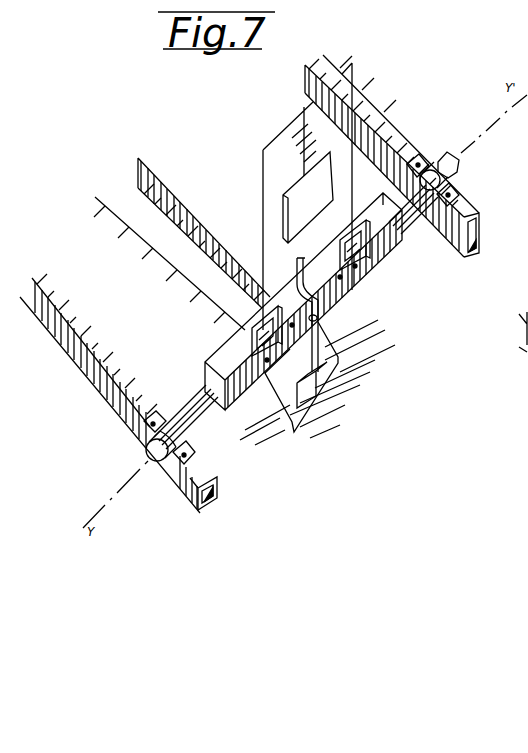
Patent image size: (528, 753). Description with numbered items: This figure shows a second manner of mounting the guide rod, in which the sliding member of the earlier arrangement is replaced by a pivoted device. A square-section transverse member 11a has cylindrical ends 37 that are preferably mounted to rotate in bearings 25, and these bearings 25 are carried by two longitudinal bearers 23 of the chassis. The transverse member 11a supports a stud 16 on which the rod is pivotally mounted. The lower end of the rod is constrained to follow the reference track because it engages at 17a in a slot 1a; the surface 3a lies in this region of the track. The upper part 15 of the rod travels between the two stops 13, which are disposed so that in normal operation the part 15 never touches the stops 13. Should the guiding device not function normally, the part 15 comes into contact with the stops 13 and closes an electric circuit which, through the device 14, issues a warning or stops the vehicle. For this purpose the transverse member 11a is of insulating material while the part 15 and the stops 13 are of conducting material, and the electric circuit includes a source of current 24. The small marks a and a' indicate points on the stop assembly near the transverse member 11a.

The longitudinal bearers 23 is at (364, 107).
The bearings 25 is at (427, 163).
The cylindrical ends 37 is at (451, 187).
The source of current 24 is at (307, 196).
The device 14 is at (308, 197).
The stops 13 is at (368, 245).
The transverse member 11a is at (383, 262).
The upper part 15 is at (307, 280).
The stud 16 is at (318, 323).
The base surface 3a is at (334, 356).
The lower end engagement 17a is at (336, 391).
The slot 1a is at (300, 436).
The rivet a is at (331, 251).
The rivet a' is at (281, 291).